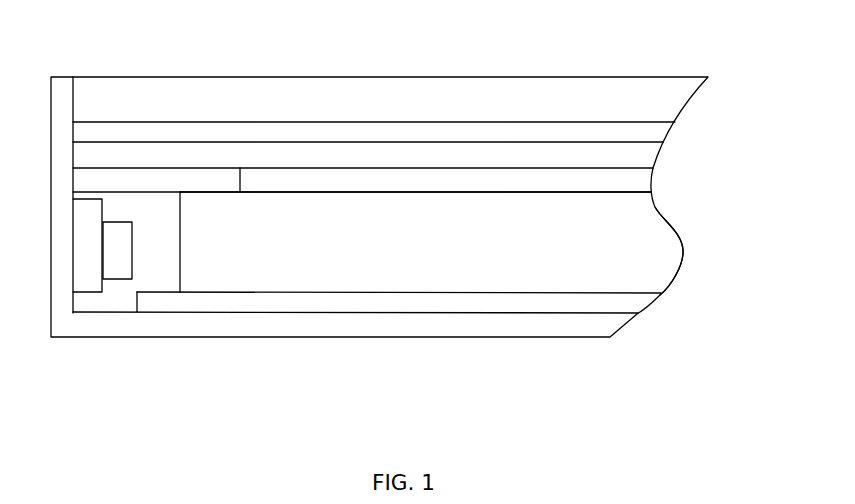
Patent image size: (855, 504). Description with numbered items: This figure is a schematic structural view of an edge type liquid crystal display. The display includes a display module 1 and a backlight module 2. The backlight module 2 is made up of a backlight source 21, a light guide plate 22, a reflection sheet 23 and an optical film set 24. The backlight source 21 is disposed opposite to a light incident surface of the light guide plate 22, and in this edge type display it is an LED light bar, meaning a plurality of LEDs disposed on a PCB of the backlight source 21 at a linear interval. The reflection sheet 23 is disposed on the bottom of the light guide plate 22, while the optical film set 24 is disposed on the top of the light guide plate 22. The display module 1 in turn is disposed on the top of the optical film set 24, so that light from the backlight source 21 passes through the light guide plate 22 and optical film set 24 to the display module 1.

The display module 1 is at (553, 90).
The backlight module 2 is at (423, 351).
The backlight source 21 is at (105, 295).
The light guide plate 22 is at (670, 258).
The reflection sheet 23 is at (655, 298).
The optical film set 24 is at (655, 155).